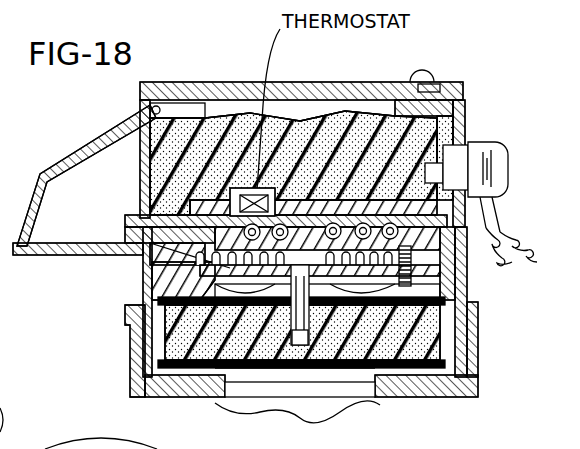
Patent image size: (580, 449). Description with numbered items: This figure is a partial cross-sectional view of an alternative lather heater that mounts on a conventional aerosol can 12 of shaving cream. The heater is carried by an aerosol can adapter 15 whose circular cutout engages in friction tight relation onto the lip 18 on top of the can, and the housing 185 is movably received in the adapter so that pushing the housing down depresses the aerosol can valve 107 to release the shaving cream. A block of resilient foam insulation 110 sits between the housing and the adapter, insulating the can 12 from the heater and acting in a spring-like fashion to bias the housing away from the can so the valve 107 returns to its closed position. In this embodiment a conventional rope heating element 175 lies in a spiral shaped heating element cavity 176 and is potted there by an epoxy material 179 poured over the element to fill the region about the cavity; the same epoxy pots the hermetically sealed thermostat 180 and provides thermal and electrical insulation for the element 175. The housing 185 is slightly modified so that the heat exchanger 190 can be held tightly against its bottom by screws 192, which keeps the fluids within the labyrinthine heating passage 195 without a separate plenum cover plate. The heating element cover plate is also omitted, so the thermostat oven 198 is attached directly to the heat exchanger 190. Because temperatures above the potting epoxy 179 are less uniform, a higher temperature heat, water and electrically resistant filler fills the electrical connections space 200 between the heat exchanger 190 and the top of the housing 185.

The aerosol can 12 is at (248, 395).
The aerosol can adapter 15 is at (138, 378).
The lip 18 is at (355, 396).
The aerosol can valve 107 is at (300, 345).
The resilient foam insulation 110 is at (173, 350).
The rope heating element 175 is at (430, 230).
The heating element cavity 176 is at (483, 226).
The epoxy material 179 is at (173, 200).
The hermetically sealed thermostat 180 is at (290, 185).
The housing 185 is at (140, 159).
The heat exchanger 190 is at (192, 247).
The screws 192 is at (437, 262).
The labyrinthine heating passage 195 is at (207, 285).
The thermostat oven 198 is at (228, 195).
The electrical connections space 200 is at (334, 130).